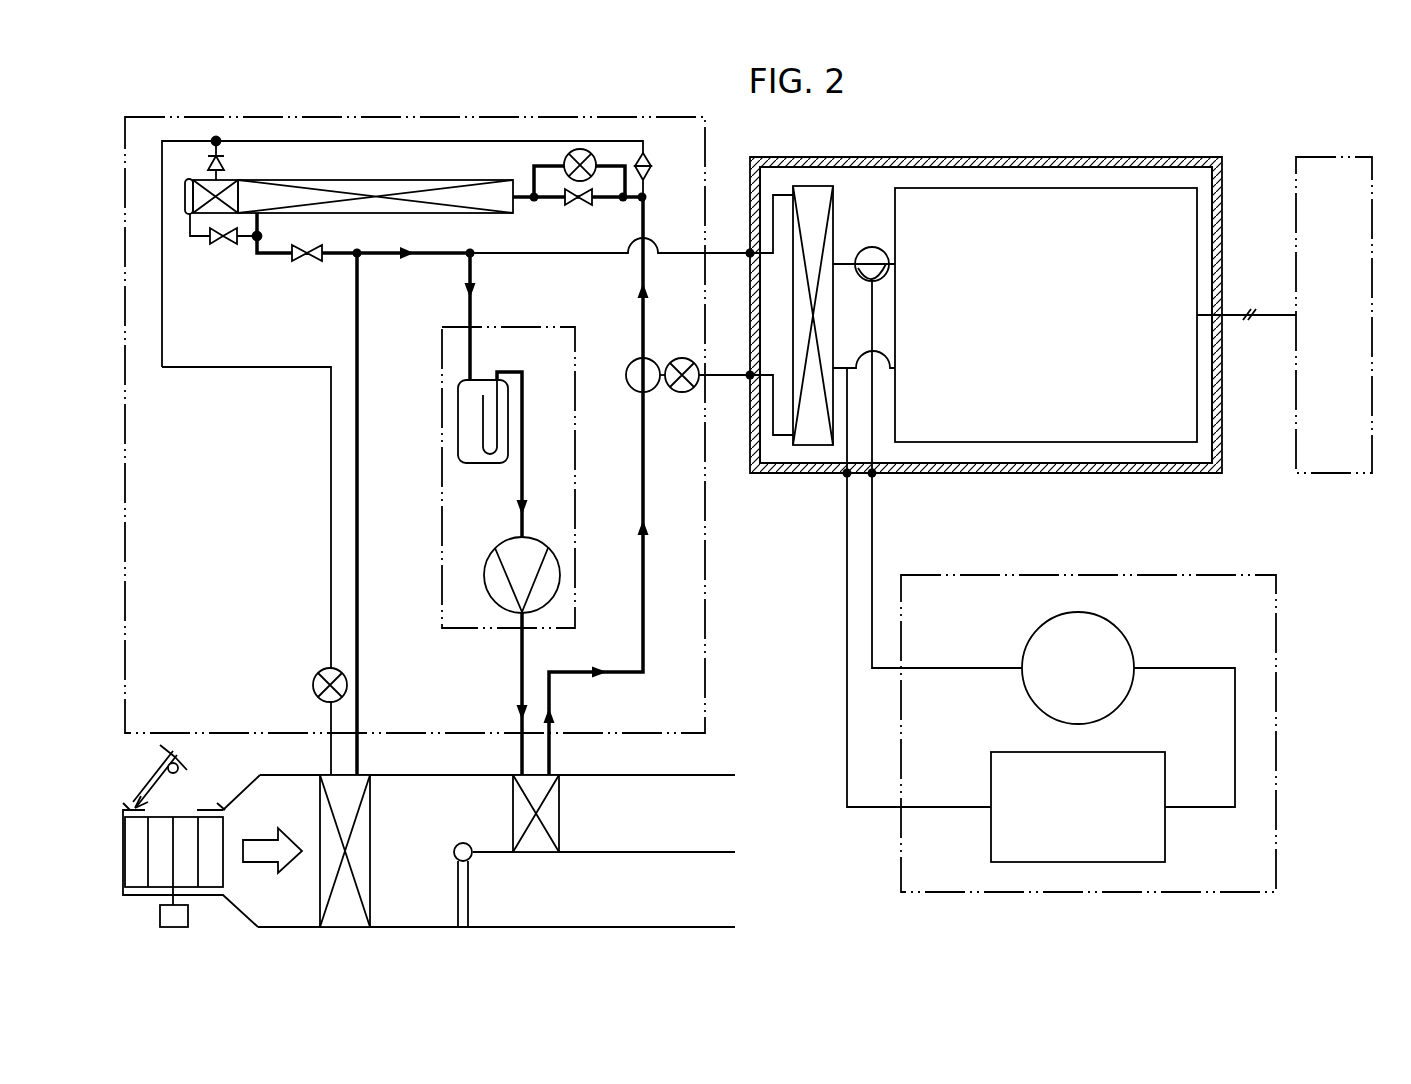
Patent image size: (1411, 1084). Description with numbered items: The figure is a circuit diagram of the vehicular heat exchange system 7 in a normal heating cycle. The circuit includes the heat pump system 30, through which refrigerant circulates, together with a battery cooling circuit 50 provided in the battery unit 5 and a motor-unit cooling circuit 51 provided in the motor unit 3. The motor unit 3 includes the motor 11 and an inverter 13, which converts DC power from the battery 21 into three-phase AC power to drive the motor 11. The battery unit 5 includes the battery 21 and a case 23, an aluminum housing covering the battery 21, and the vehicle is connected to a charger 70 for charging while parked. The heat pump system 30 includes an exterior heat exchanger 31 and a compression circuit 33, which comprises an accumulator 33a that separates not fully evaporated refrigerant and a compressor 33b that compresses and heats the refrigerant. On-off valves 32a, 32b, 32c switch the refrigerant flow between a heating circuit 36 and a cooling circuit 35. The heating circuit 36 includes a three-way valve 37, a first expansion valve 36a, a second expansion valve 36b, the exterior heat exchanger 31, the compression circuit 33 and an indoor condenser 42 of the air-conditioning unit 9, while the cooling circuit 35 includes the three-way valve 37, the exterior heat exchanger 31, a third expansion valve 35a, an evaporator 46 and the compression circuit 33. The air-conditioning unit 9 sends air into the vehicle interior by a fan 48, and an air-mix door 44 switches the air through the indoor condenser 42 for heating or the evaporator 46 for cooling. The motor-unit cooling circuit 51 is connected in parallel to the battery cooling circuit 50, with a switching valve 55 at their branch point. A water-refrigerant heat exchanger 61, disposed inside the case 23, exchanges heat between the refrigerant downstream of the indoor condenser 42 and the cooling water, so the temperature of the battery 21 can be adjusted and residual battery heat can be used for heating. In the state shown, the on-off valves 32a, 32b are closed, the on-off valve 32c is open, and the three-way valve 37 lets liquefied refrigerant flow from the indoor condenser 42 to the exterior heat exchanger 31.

The motor unit 3 is at (1035, 682).
The battery unit 5 is at (984, 309).
The vehicular heat exchange system 7 is at (734, 516).
The air-conditioning unit 9 is at (431, 842).
The motor 11 is at (1030, 694).
The inverter 13 is at (995, 846).
The battery 21 is at (1165, 437).
The case 23 is at (985, 155).
The heat pump system 30 is at (706, 625).
The exterior heat exchanger 31 is at (372, 202).
The on-off valve 32a is at (650, 168).
The on-off valve 32b is at (582, 205).
The on-off valve 32c is at (307, 262).
The compression circuit 33 is at (479, 477).
The accumulator 33a is at (465, 452).
The compressor 33b is at (492, 553).
The cooling circuit 35 is at (290, 560).
The third expansion valve 35a is at (313, 685).
The heating circuit 36 is at (487, 660).
The first expansion valve 36a is at (583, 150).
The second expansion valve 36b is at (682, 393).
The three-way valve 37 is at (632, 390).
The indoor condenser 42 is at (520, 812).
The air-mix door 44 is at (458, 893).
The evaporator 46 is at (325, 898).
The fan 48 is at (133, 870).
The battery cooling circuit 50 is at (848, 188).
The motor-unit cooling circuit 51 is at (845, 784).
The switching valve 55 is at (880, 255).
The water-refrigerant heat exchanger 61 is at (823, 227).
The charger 70 is at (1334, 458).